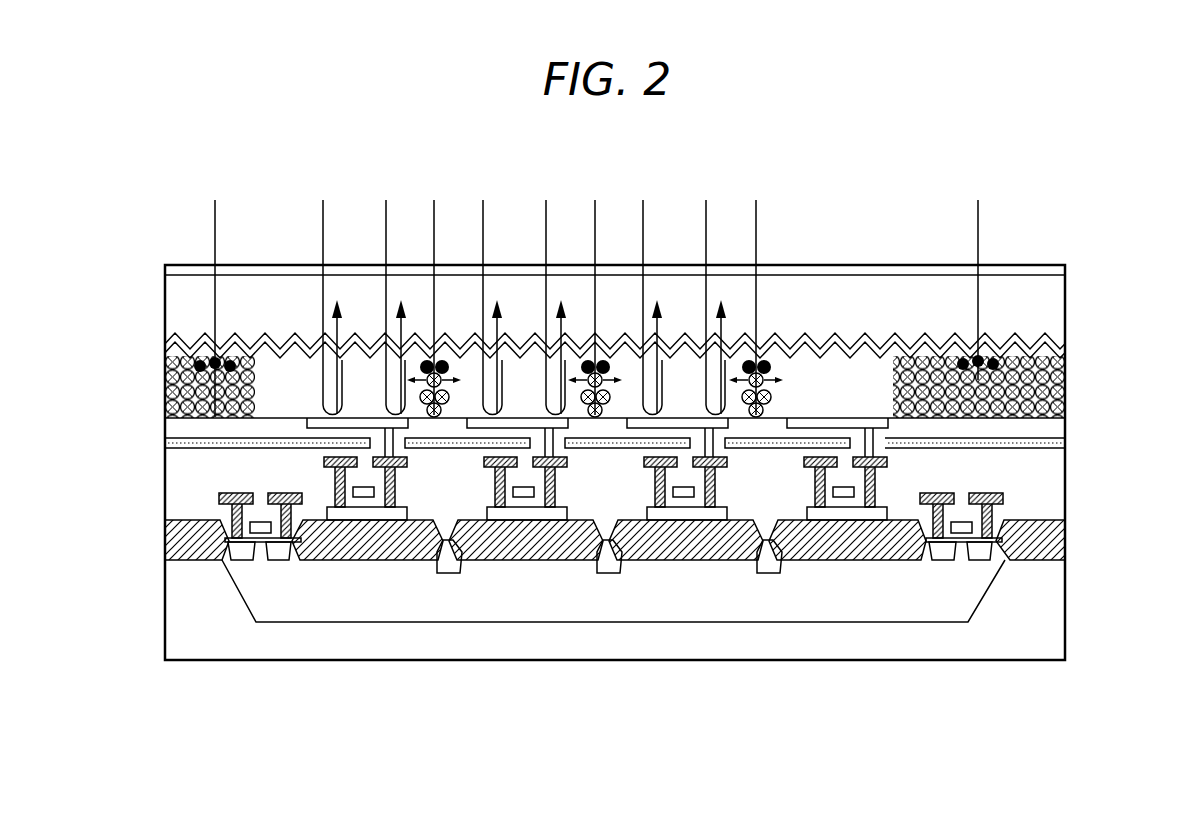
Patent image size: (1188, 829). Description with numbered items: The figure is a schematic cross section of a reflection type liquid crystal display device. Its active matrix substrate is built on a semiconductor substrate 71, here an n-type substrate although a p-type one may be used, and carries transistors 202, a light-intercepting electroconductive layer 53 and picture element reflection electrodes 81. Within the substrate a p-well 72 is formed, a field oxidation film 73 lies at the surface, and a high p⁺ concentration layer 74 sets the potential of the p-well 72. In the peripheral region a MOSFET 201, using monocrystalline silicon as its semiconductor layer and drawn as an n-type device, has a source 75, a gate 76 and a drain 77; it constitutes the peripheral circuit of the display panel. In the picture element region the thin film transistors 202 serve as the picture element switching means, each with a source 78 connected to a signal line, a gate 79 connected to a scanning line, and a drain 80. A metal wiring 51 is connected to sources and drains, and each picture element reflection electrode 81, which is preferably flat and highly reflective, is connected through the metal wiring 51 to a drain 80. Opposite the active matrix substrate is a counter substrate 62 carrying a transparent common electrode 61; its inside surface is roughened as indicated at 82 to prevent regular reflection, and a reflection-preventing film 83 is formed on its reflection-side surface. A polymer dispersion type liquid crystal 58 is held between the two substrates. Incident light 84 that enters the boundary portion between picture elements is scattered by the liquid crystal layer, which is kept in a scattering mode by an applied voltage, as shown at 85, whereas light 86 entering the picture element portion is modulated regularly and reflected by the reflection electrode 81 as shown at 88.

The metal wiring 51 is at (978, 492).
The light-intercepting electroconductive layer 53 is at (165, 446).
The polymer dispersion type liquid crystal 58 is at (158, 352).
The transparent common electrode 61 is at (887, 350).
The counter substrate 62 is at (950, 303).
The semiconductor substrate 71 is at (1058, 583).
The p-well 72 is at (907, 618).
The field oxidation film 73 is at (765, 712).
The high p⁺ concentration layer 74 is at (448, 574).
The source of MOSFET 75 is at (957, 722).
The gate of MOSFET 76 is at (992, 722).
The drain of MOSFET 77 is at (1037, 722).
The source of thin film transistor 78 is at (810, 698).
The gate of thin film transistor 79 is at (842, 690).
The drain of thin film transistor 80 is at (873, 698).
The picture element reflection electrode 81 is at (851, 416).
The roughened inside surface 82 is at (1043, 333).
The reflection-preventing film 83 is at (735, 265).
The incident light 84 is at (758, 225).
The scattering of light 85 is at (782, 373).
The light introduced to picture element portion 86 is at (642, 232).
The reflected light 88 is at (647, 336).
The MOSFET 201 is at (1060, 748).
The thin film transistor 202 is at (895, 740).